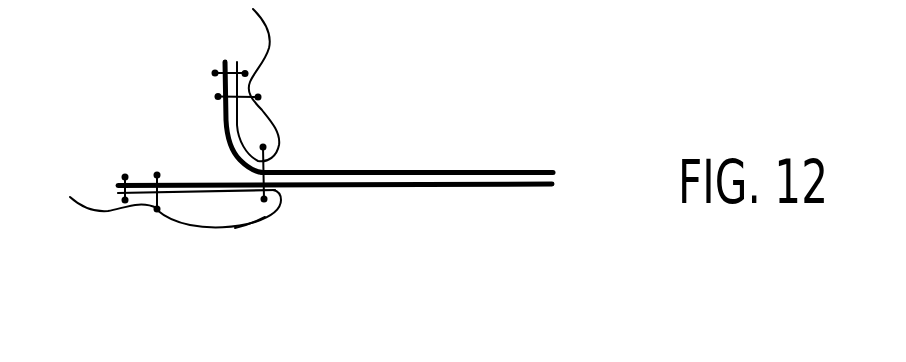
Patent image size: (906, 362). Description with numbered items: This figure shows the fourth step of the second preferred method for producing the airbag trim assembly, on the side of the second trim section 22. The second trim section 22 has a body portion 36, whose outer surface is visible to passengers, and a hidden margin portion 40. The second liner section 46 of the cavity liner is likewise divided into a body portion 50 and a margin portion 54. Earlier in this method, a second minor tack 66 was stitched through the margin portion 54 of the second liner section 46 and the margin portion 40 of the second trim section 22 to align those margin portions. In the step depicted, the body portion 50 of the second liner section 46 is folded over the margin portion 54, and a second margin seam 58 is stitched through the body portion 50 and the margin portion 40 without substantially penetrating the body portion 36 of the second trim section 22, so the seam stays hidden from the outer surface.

The second trim section 22 is at (378, 187).
The body portion of the second trim section 36 is at (470, 187).
The margin portion of the second trim section 40 is at (215, 184).
The second liner section 46 is at (255, 225).
The body portion of the second liner section 50 is at (222, 228).
The margin portion of the second liner section 54 is at (193, 196).
The second margin seam 58 is at (157, 210).
The second minor tack 66 is at (123, 175).